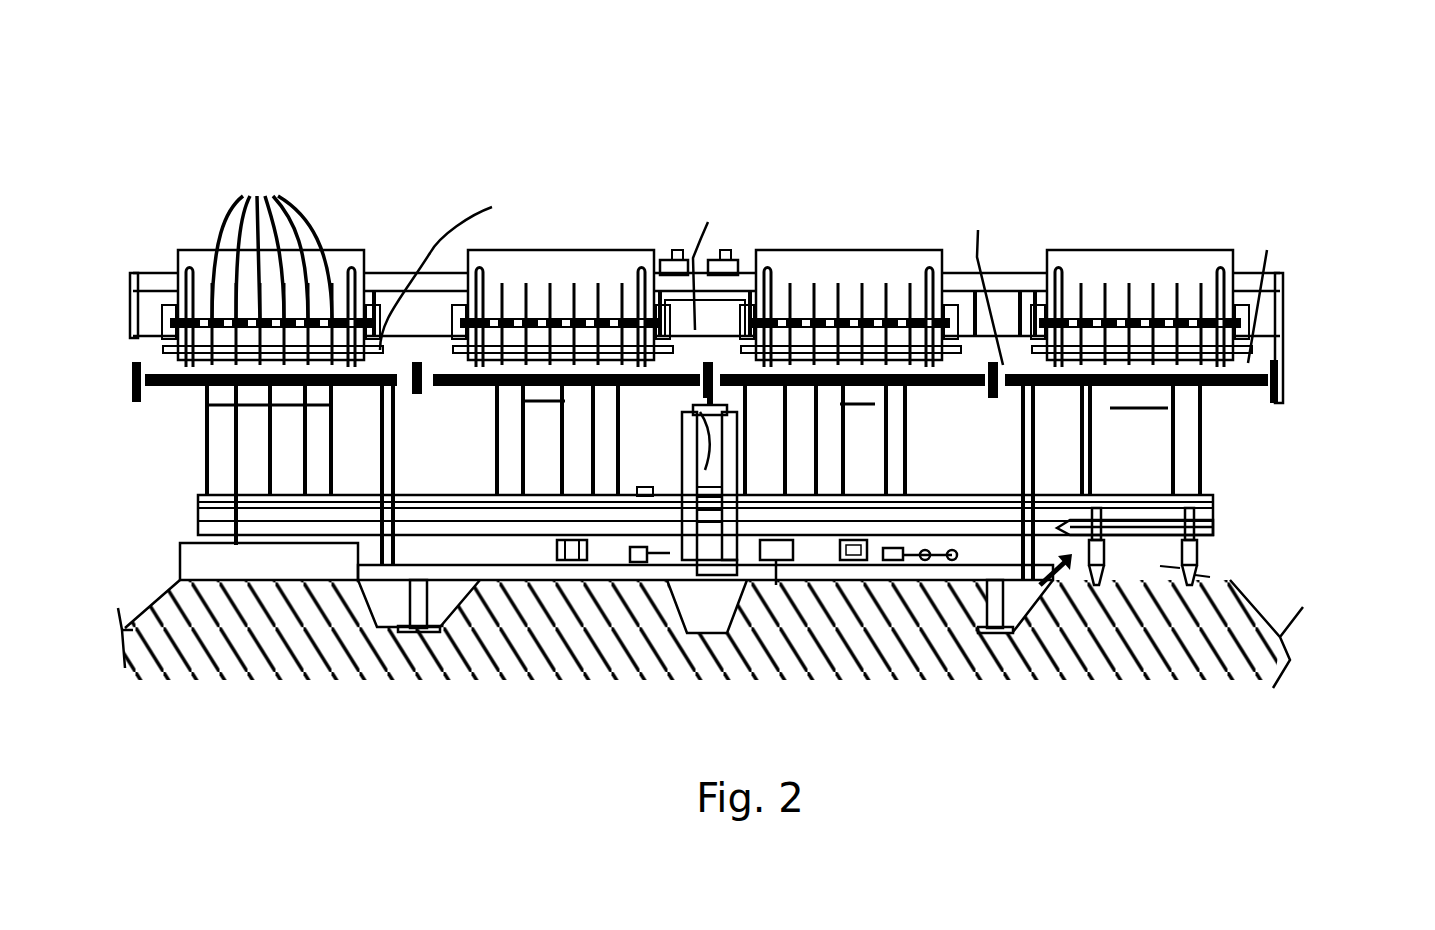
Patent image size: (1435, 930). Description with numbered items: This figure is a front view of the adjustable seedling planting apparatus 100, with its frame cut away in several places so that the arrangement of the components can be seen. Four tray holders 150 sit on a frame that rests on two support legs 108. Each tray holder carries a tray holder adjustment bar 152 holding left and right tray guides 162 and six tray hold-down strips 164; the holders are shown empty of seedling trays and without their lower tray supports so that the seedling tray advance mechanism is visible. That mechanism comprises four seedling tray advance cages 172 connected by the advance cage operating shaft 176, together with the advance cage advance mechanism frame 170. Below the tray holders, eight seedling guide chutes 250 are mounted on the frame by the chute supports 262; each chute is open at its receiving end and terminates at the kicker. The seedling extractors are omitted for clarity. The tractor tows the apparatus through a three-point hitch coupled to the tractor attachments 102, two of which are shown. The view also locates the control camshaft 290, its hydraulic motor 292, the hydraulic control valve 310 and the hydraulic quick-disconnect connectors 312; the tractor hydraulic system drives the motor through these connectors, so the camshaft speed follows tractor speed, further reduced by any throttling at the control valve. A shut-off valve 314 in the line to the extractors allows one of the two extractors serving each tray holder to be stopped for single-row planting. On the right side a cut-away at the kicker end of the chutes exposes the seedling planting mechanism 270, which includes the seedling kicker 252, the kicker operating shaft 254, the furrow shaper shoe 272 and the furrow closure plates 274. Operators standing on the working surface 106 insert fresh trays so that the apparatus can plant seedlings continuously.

The printing system frame 100 is at (393, 257).
The tractor attachments 102 is at (560, 567).
The working surface 106 is at (367, 570).
The support legs 108 is at (415, 630).
The tray holders 150 is at (338, 253).
The tray holder adjustment bar 152 is at (1150, 283).
The tray guides 162 is at (185, 247).
The tray hold-down strips 164 is at (272, 244).
The advance cage advance mechanism frame 170 is at (668, 578).
The seedling tray advance cages 172 is at (834, 332).
The advance cage operating shaft 176 is at (468, 253).
The seedling guide chutes 250 is at (607, 450).
The seedling kicker 252 is at (1103, 557).
The kicker operating shaft 254 is at (1170, 517).
The chute supports 262 is at (265, 395).
The seedling planting mechanism 270 is at (1213, 528).
The furrow shaper shoe 272 is at (1180, 568).
The furrow closure plates 274 is at (1210, 577).
The control camshaft 290 is at (585, 565).
The hydraulic motor 292 is at (745, 575).
The hydraulic control valve 310 is at (850, 562).
The hydraulic quick-disconnect connectors 312 is at (952, 560).
The shut-off valve 314 is at (670, 253).